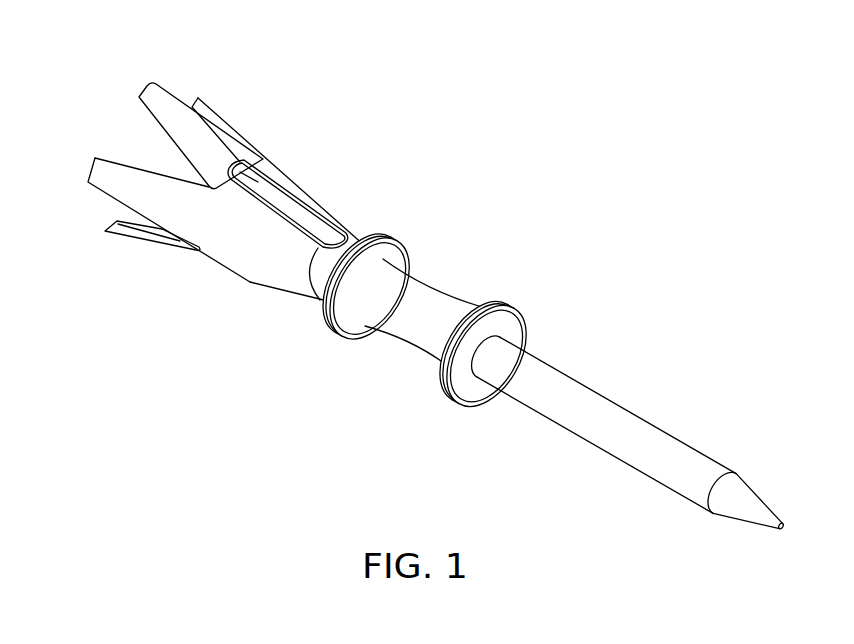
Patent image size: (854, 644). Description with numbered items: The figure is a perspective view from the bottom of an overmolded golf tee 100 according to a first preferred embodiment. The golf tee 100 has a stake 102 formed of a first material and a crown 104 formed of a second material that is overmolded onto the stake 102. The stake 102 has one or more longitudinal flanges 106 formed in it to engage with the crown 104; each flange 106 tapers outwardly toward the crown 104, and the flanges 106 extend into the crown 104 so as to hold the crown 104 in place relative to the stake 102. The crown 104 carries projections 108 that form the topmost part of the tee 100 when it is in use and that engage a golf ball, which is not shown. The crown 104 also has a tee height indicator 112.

The golf tee 100 is at (582, 122).
The stake 102 is at (607, 416).
The crown 104 is at (276, 278).
The longitudinal flange 106 is at (286, 197).
The projections 108 is at (100, 175).
The tee height indicator 112 is at (509, 321).